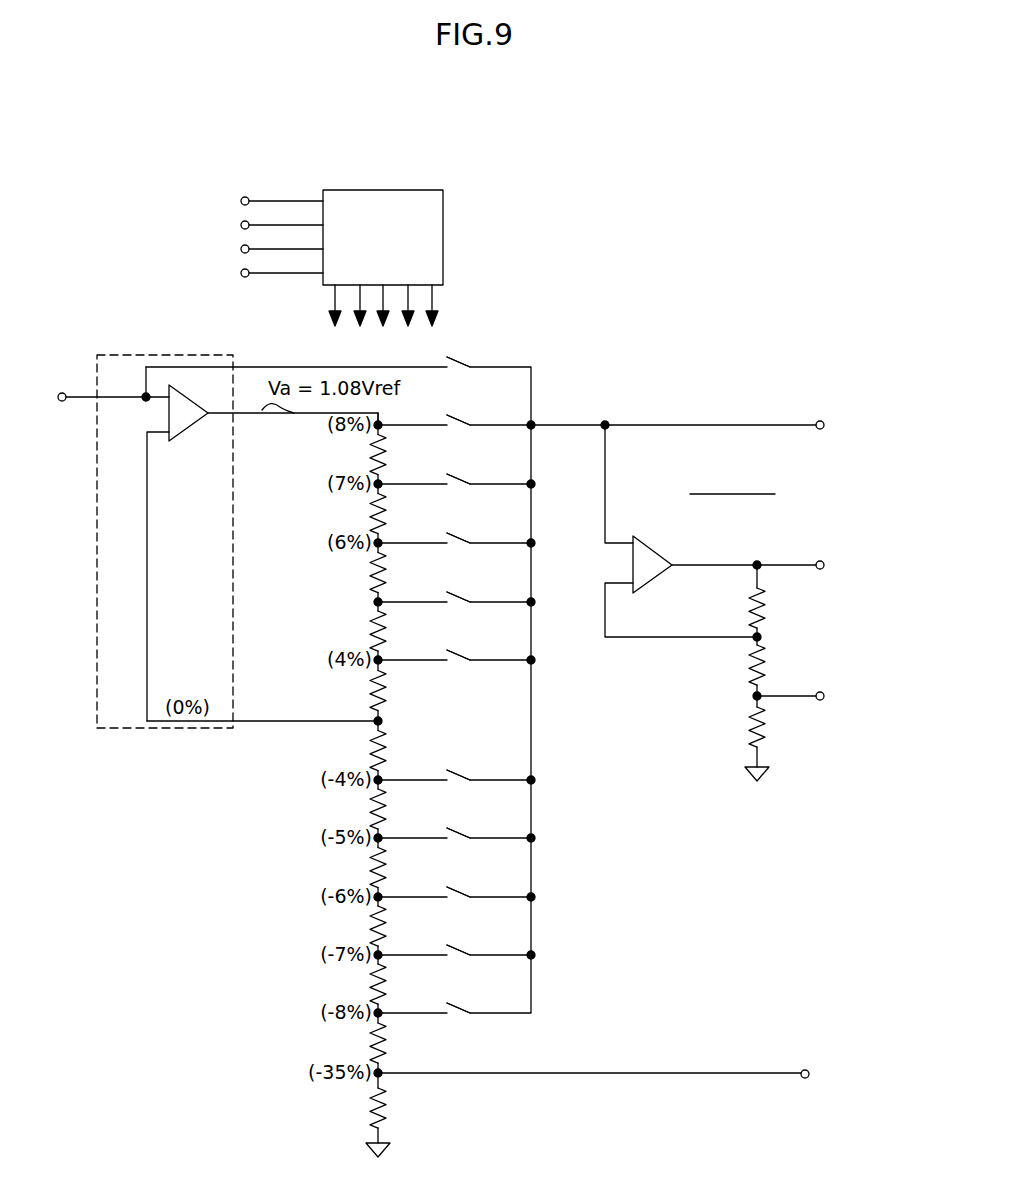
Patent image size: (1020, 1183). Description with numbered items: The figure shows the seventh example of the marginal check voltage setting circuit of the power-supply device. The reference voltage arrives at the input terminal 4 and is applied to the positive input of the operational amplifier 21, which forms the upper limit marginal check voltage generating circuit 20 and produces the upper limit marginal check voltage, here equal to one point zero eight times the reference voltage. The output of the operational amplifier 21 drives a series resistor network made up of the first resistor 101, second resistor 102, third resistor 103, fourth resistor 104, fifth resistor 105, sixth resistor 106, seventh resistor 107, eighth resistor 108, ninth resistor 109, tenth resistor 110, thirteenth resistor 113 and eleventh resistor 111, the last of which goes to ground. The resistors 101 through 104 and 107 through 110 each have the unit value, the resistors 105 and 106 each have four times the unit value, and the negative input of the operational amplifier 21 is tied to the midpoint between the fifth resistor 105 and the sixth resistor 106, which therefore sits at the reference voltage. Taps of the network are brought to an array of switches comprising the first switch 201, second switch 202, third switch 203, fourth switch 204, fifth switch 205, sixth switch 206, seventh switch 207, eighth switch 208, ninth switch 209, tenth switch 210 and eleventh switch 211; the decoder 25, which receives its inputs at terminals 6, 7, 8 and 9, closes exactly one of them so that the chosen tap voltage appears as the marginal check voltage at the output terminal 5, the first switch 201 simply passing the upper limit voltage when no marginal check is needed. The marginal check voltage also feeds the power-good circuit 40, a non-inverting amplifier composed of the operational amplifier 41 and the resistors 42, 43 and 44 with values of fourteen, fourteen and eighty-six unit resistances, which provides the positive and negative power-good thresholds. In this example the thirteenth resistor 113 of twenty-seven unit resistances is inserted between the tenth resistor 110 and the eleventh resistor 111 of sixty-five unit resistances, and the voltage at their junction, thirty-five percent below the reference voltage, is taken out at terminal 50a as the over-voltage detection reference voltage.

The input terminal 4 is at (62, 403).
The output terminal 5 is at (824, 425).
The decoder input terminal 6 is at (239, 201).
The decoder input terminal 7 is at (239, 225).
The decoder input terminal 8 is at (239, 249).
The decoder input terminal 9 is at (239, 273).
The upper limit marginal check voltage generating circuit 20 is at (136, 340).
The operational amplifier 21 is at (163, 417).
The decoder 25 is at (374, 190).
The power-good circuit 40 is at (729, 603).
The operational amplifier 41 is at (652, 545).
The resistor 42 is at (767, 608).
The resistor 43 is at (767, 648).
The resistor 44 is at (767, 725).
The overvoltage detection output terminal 50a is at (809, 1074).
The first resistor 101 is at (388, 454).
The second resistor 102 is at (388, 514).
The third resistor 103 is at (388, 572).
The fourth resistor 104 is at (388, 631).
The fifth resistor 105 is at (388, 690).
The sixth resistor 106 is at (388, 750).
The seventh resistor 107 is at (388, 809).
The eighth resistor 108 is at (388, 868).
The ninth resistor 109 is at (388, 926).
The tenth resistor 110 is at (388, 984).
The eleventh resistor 111 is at (388, 1108).
The thirteenth resistor 113 is at (388, 1043).
The first switch 201 is at (460, 364).
The second switch 202 is at (460, 422).
The third switch 203 is at (460, 481).
The fourth switch 204 is at (460, 540).
The fifth switch 205 is at (460, 599).
The sixth switch 206 is at (460, 657).
The seventh switch 207 is at (460, 777).
The eighth switch 208 is at (460, 835).
The ninth switch 209 is at (460, 894).
The tenth switch 210 is at (460, 952).
The eleventh switch 211 is at (460, 1010).